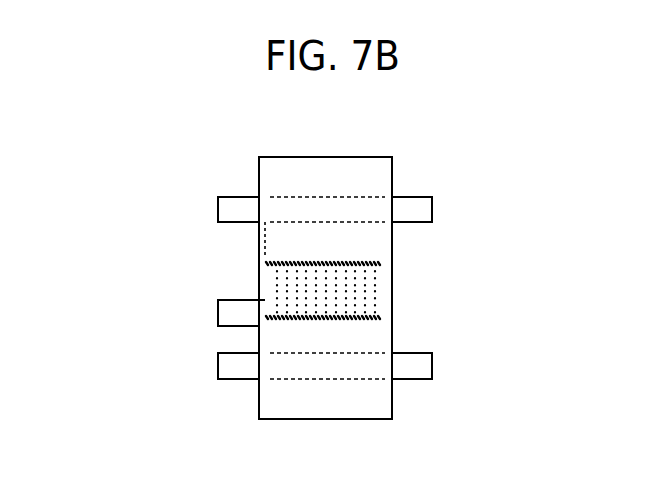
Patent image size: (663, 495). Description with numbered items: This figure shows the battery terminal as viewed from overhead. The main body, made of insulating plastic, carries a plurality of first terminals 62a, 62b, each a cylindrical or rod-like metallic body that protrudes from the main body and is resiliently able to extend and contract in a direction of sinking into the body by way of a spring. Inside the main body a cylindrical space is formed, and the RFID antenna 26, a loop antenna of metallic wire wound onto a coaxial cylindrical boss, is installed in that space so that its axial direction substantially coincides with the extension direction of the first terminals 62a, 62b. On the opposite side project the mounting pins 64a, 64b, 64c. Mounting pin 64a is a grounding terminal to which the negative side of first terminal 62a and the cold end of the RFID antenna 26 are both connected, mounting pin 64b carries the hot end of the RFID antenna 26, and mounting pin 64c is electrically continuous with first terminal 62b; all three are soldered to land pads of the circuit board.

The RFID antenna 26 is at (320, 285).
The first terminal 62a is at (413, 207).
The first terminal 62b is at (407, 368).
The mounting pin 64a is at (220, 203).
The mounting pin 64b is at (218, 304).
The mounting pin 64c is at (218, 360).